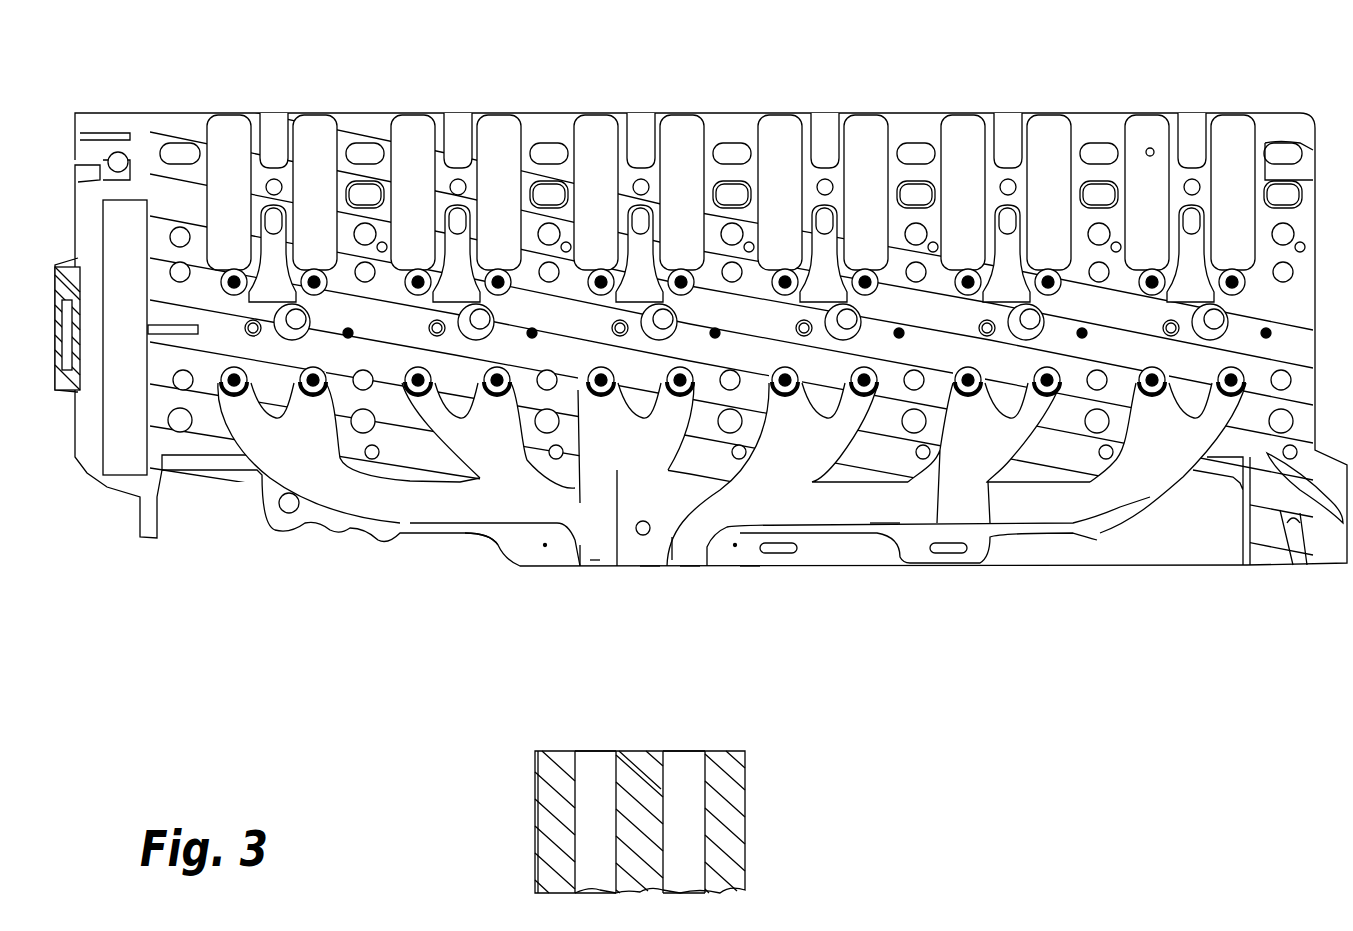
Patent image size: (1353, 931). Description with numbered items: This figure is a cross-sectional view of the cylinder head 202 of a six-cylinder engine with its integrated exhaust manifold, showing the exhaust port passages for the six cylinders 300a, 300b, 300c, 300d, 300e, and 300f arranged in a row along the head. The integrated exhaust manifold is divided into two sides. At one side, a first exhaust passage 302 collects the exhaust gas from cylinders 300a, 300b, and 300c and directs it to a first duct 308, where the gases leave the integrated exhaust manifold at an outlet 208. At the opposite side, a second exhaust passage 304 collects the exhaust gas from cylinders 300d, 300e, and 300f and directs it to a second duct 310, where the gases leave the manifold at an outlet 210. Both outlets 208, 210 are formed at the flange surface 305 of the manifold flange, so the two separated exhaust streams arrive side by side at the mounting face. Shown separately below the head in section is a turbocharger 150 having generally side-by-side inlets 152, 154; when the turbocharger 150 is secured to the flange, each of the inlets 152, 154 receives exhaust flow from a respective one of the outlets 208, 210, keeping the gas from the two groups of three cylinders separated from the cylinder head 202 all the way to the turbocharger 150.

The cylinder head 202 is at (960, 113).
The cylinder 300a is at (1145, 452).
The cylinder 300b is at (975, 450).
The cylinder 300c is at (780, 455).
The cylinder 300d is at (290, 450).
The cylinder 300e is at (475, 455).
The cylinder 300f is at (615, 447).
The first exhaust passage 302 is at (885, 510).
The second exhaust passage 304 is at (525, 555).
The flange surface 305 is at (655, 560).
The outlet 208 is at (688, 565).
The outlet 210 is at (590, 560).
The first duct 308 is at (750, 560).
The second duct 310 is at (590, 550).
The turbocharger 150 is at (745, 805).
The inlet 152 is at (688, 855).
The inlet 154 is at (597, 829).